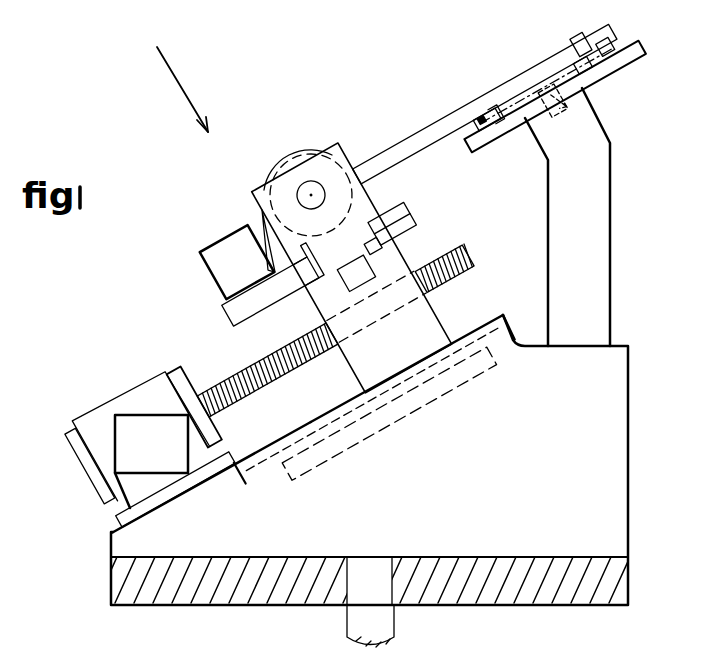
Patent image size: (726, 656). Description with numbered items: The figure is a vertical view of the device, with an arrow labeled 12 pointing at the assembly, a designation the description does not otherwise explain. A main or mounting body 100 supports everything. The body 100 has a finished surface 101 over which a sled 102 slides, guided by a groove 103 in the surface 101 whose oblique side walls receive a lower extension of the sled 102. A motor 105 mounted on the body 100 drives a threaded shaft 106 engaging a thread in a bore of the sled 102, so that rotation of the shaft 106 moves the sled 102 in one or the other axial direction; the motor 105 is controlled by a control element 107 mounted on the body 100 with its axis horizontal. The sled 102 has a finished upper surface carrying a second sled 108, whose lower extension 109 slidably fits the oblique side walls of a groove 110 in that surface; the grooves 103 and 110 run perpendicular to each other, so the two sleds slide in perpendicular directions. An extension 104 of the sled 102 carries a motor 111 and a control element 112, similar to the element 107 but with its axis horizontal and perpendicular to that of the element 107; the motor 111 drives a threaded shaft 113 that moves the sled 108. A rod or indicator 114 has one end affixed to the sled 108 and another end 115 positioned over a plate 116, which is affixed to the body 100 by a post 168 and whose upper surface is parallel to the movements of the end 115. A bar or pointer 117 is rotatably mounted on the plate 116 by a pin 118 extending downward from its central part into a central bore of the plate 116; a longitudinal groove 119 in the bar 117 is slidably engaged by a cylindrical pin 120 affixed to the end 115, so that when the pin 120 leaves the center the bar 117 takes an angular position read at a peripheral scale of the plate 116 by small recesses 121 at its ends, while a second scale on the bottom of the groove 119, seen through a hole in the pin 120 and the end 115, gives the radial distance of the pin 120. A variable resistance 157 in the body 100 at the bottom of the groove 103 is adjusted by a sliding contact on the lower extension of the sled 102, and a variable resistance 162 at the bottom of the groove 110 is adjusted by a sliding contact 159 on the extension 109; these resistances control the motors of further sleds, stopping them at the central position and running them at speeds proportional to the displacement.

The apparatus 12 is at (182, 89).
The main or mounting body 100 is at (363, 481).
The finished surface 101 is at (277, 442).
The sled 102 is at (374, 392).
The groove 103 is at (505, 317).
The extension or integral part 104 is at (247, 320).
The motor 105 is at (148, 445).
The shaft 106 is at (311, 344).
The control element 107 is at (151, 461).
The second sled 108 is at (338, 150).
The lower extension 109 is at (388, 243).
The groove 110 is at (312, 281).
The motor 111 is at (303, 157).
The control element 112 is at (237, 254).
The shaft 113 is at (314, 199).
The rod or indicator 114 is at (430, 133).
The end 115 is at (581, 46).
The plate 116 is at (621, 59).
The bar or pointer 117 is at (611, 44).
The pin or small shaft 118 is at (559, 118).
The longitudinal groove 119 is at (490, 111).
The cylindrical pin 120 is at (578, 62).
The small recesses 121 is at (493, 117).
The variable resistance 157 is at (458, 385).
The sliding contact 159 is at (366, 260).
The variable resistance 162 is at (364, 278).
The post 168 is at (598, 258).